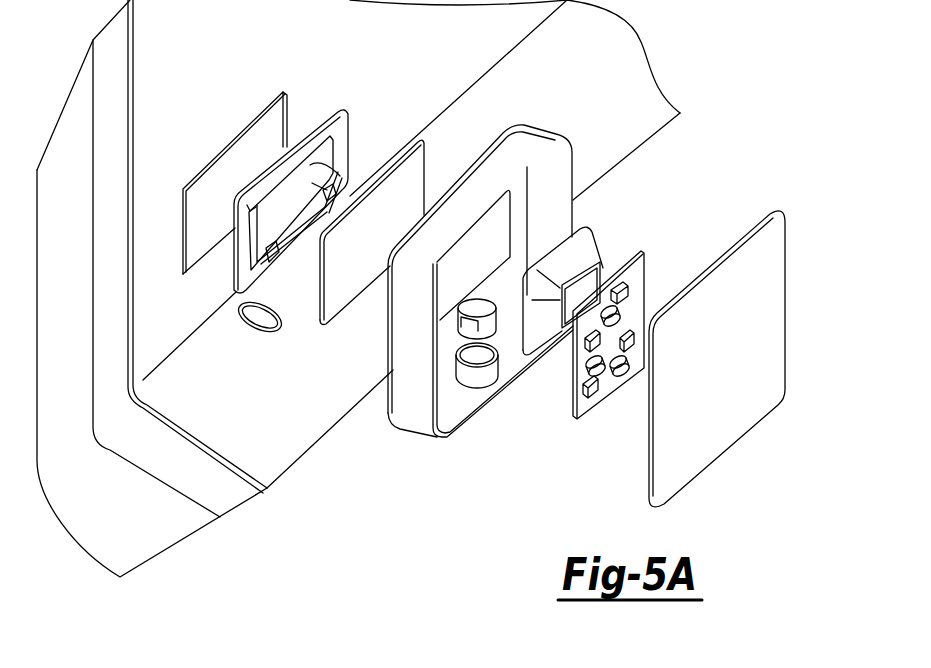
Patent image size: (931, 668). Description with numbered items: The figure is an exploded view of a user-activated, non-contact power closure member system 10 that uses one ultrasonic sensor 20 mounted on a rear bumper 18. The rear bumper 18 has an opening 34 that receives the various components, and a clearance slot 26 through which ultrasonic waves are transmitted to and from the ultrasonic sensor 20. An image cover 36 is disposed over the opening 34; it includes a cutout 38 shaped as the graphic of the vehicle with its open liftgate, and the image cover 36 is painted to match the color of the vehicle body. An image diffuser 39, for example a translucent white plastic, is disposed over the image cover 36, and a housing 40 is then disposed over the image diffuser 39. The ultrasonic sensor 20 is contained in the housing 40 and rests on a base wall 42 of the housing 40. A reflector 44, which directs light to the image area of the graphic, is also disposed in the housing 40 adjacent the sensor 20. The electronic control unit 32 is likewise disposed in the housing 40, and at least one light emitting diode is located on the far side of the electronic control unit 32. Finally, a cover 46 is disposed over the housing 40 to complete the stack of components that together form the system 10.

The user-activated, non-contact power closure member system 10 is at (730, 88).
The rear bumper 18 is at (158, 535).
The ultrasonic sensor 20 is at (487, 377).
The clearance slot 26 is at (257, 323).
The electronic control unit 32 is at (637, 268).
The opening 34 is at (230, 158).
The image cover 36 is at (328, 120).
The cutout 38 is at (352, 183).
The image diffuser 39 is at (413, 167).
The housing 40 is at (530, 148).
The base wall 42 is at (448, 417).
The reflector 44 is at (580, 253).
The cover 46 is at (762, 275).